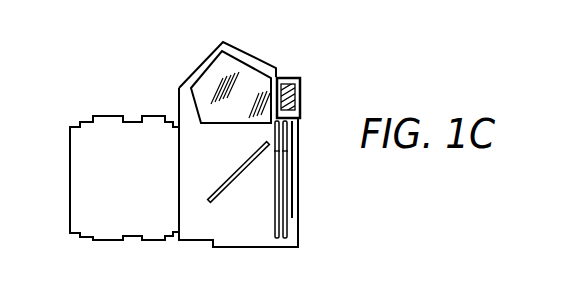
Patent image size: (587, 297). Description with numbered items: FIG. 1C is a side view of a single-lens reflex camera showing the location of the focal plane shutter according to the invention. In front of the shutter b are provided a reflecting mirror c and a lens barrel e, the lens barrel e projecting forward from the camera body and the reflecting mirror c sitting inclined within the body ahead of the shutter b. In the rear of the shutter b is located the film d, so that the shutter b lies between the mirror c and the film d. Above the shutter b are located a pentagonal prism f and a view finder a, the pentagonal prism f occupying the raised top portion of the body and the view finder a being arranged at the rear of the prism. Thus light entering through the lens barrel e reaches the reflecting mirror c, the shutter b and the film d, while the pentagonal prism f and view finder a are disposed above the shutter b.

The view finder a is at (302, 92).
The shutter b is at (280, 248).
The reflecting mirror c is at (228, 188).
The film d is at (293, 211).
The lens barrel e is at (108, 214).
The pentagonal prism f is at (242, 84).